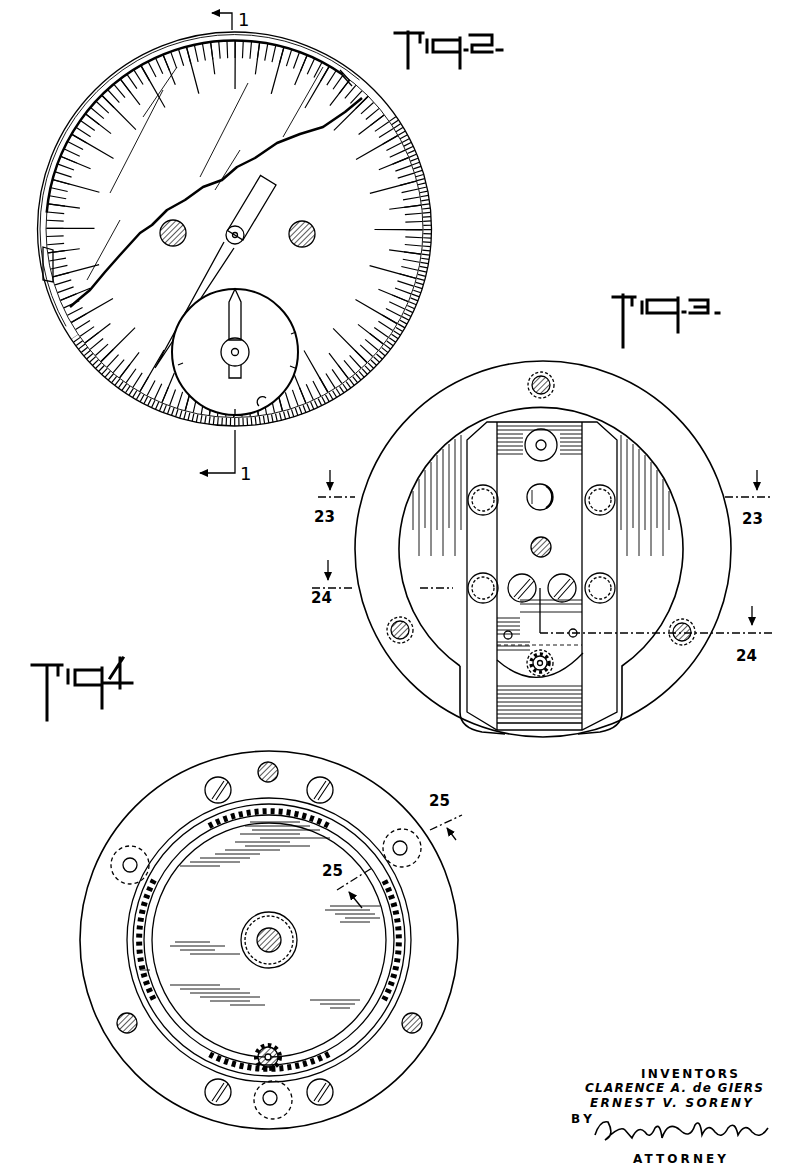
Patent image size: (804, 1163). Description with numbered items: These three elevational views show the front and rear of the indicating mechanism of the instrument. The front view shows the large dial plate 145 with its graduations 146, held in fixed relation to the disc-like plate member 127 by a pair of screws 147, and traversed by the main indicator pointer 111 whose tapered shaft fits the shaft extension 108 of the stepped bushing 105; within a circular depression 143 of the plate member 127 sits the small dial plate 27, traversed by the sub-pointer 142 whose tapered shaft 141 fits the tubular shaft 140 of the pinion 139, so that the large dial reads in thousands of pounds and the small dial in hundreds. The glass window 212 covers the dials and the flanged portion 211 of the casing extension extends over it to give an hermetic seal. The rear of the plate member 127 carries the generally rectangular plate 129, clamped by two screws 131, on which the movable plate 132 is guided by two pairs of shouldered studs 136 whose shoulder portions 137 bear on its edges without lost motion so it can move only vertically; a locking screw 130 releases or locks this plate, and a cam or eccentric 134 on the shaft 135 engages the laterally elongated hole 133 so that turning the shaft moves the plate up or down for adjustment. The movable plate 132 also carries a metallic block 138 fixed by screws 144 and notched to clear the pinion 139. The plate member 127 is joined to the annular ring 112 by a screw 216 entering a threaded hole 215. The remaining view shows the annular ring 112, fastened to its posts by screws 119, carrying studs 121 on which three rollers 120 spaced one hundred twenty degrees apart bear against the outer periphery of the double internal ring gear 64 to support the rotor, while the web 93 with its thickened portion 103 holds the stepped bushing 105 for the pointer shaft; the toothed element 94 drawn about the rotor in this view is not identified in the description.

In FIG. 2, the glass window 212 is at (210, 52).
In FIG. 2, the graduations 146 is at (273, 70).
In FIG. 2, the flanged portion 211 is at (73, 135).
In FIG. 2, the dial plate 145 is at (372, 171).
In FIG. 2, the screws 147 is at (200, 219).
In FIG. 2, the indicator pointer 111 is at (208, 284).
In FIG. 2, the sub-pointer 142 is at (242, 308).
In FIG. 2, the tapered shaft 141 is at (241, 351).
In FIG. 2, the dial plate 27 is at (232, 390).
In FIG. 2, the circular depression 143 is at (265, 406).
In FIG. 3, the disc like plate member 127 is at (688, 462).
In FIG. 3, the rectangular plate 129 is at (600, 693).
In FIG. 3, the movable plate 132 is at (510, 437).
In FIG. 3, the locking screw 130 is at (546, 438).
In FIG. 3, the cam or eccentric 134 is at (538, 487).
In FIG. 3, the laterally elongated hole 133 is at (555, 495).
In FIG. 3, the shaft 135 is at (536, 505).
In FIG. 3, the shaft extension 108 is at (557, 528).
In FIG. 4, the shaft extension 108 is at (275, 930).
In FIG. 3, the shouldered studs 136 is at (470, 500).
In FIG. 3, the shoulder portion 137 is at (484, 488).
In FIG. 3, the screws 131 is at (522, 574).
In FIG. 3, the screw 216 is at (542, 372).
In FIG. 3, the metallic block 138 is at (515, 625).
In FIG. 3, the screws 144 is at (504, 638).
In FIG. 3, the pinion 139 is at (528, 668).
In FIG. 4, the pinion 139 is at (281, 1054).
In FIG. 3, the tubular shaft 140 is at (553, 660).
In FIG. 4, the tubular shaft 140 is at (268, 1052).
In FIG. 4, the annular ring 112 is at (452, 938).
In FIG. 4, the web 93 is at (190, 840).
In FIG. 4, the gear ring 94 is at (333, 832).
In FIG. 4, the thickened portion 103 is at (350, 950).
In FIG. 4, the stepped bushing 105 is at (246, 916).
In FIG. 4, the screws 119 is at (220, 778).
In FIG. 4, the threaded hole 215 is at (270, 762).
In FIG. 4, the studs 121 is at (134, 858).
In FIG. 4, the rollers 120 is at (117, 852).
In FIG. 4, the double internal ring gear 64 is at (140, 973).